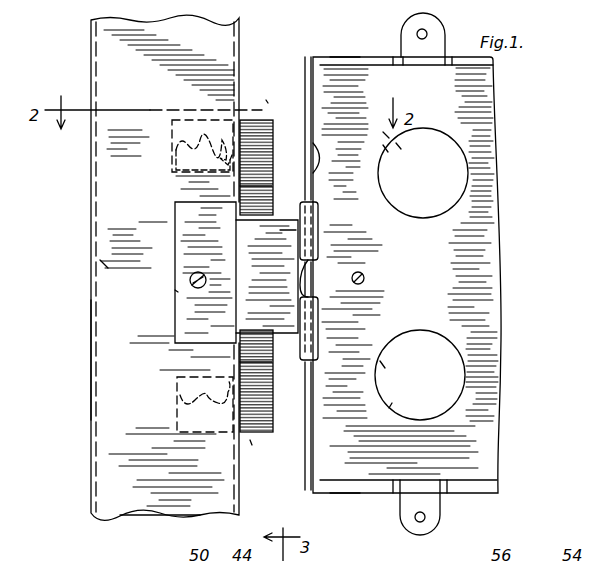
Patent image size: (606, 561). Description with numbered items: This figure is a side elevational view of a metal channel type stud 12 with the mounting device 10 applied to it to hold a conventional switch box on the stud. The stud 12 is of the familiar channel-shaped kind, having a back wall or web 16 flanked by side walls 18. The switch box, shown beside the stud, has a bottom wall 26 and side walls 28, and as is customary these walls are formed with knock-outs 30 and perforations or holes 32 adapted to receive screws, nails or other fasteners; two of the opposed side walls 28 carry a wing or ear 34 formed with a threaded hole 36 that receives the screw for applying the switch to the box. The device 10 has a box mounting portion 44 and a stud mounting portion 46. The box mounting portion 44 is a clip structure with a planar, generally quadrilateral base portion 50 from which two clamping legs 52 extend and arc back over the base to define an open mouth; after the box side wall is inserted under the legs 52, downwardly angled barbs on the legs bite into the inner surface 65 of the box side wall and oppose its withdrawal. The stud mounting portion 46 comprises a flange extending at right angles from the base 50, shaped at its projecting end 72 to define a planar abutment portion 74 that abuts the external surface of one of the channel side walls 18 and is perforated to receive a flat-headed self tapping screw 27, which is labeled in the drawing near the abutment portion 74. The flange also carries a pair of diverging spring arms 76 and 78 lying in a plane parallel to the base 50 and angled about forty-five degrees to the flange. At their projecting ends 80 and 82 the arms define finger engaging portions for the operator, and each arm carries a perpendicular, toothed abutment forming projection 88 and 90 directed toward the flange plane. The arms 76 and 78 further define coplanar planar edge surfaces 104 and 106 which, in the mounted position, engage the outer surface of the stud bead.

The device 10 is at (269, 99).
The metal channel type stud 12 is at (88, 479).
The back wall or web 16 is at (91, 363).
The side walls 18 is at (128, 503).
The bottom wall 26 is at (380, 480).
The edge of bracket 27 is at (176, 290).
The side walls 28 is at (358, 60).
The knock-outs 30 is at (440, 150).
The perforations or holes 32 is at (366, 278).
The wing or ear 34 is at (403, 32).
The threaded hole 36 is at (426, 32).
The box mounting portion 44 is at (336, 248).
The stud mounting portion 46 is at (251, 440).
The base portion 50 is at (298, 277).
The clamping legs 52 is at (320, 222).
The inner surface 65 is at (313, 166).
The projecting end 72 is at (175, 212).
The abutment portion 74 is at (190, 284).
The spring arm 76 is at (108, 267).
The spring arm 78 is at (271, 150).
The projecting end 80 is at (172, 128).
The projecting end 82 is at (180, 417).
The abutment forming projection 88 is at (176, 155).
The abutment forming projection 90 is at (182, 395).
The planar edge surface 104 is at (240, 362).
The planar edge surface 106 is at (240, 186).